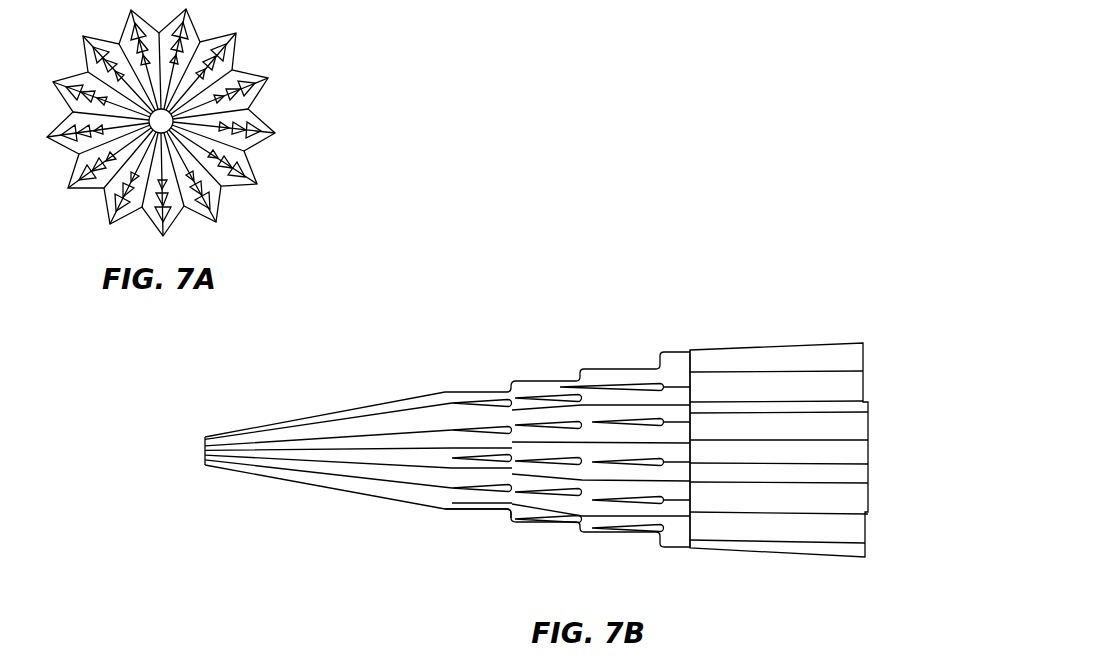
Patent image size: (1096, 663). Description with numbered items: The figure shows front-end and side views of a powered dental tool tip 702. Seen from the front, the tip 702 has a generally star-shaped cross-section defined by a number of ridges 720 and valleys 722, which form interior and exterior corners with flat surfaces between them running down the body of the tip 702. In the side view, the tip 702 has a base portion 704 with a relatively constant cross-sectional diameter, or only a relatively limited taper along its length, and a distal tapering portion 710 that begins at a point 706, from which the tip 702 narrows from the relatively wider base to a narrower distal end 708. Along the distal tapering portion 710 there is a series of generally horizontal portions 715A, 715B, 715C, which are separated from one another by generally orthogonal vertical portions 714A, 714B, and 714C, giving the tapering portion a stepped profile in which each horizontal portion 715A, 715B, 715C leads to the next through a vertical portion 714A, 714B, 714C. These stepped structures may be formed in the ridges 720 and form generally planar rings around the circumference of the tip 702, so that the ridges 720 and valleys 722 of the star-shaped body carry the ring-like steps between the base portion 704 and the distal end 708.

In FIG. 7A, the dental tool tip 702 is at (312, 97).
In FIG. 7B, the dental tool tip 702 is at (806, 305).
In FIG. 7B, the base portion 704 is at (738, 342).
In FIG. 7B, the point 706 is at (691, 548).
In FIG. 7B, the distal end 708 is at (203, 452).
In FIG. 7B, the distal tapering portion 710 is at (302, 418).
In FIG. 7B, the vertical portion 714A is at (505, 383).
In FIG. 7B, the vertical portion 714B is at (578, 369).
In FIG. 7B, the vertical portion 714C is at (659, 353).
In FIG. 7B, the horizontal portion 715A is at (487, 508).
In FIG. 7B, the horizontal portion 715B is at (561, 520).
In FIG. 7B, the horizontal portion 715C is at (642, 535).
In FIG. 7A, the ridge 720 is at (110, 218).
In FIG. 7A, the valley 722 is at (248, 49).